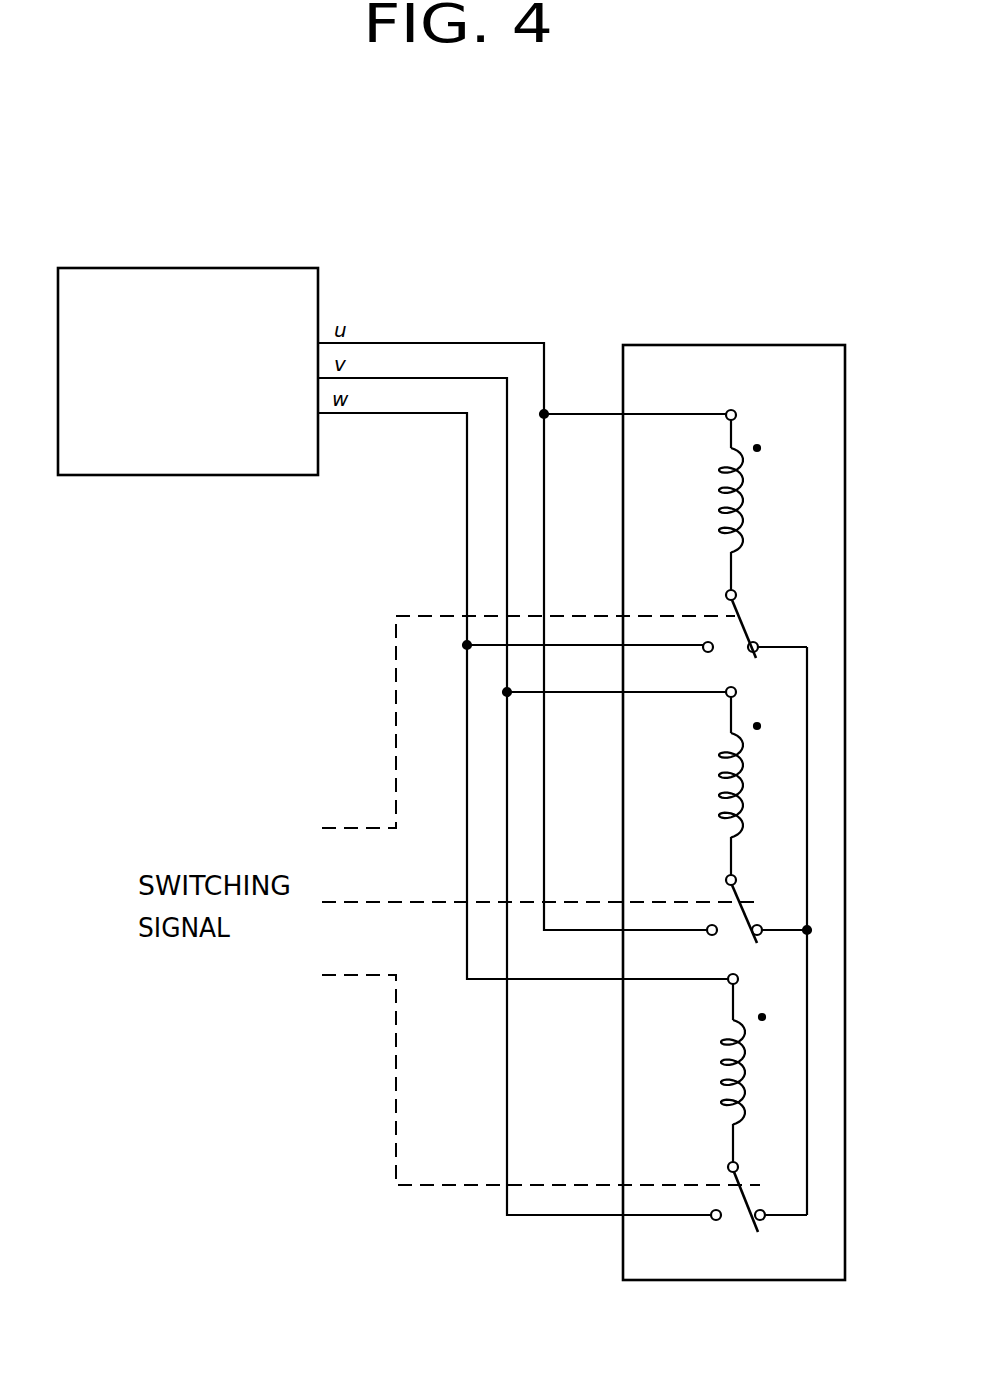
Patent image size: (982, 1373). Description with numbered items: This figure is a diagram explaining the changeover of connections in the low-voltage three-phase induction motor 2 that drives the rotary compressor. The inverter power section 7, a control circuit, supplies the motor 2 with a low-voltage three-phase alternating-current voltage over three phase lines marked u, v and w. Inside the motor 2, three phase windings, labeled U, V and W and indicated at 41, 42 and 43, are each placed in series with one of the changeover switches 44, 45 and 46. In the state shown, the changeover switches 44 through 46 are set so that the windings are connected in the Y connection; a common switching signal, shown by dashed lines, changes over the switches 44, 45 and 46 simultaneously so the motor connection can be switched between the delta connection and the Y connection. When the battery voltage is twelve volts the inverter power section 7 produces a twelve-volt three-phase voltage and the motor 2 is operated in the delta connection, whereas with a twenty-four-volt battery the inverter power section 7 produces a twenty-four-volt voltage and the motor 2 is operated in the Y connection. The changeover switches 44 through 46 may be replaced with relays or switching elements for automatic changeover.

The inverter power section 7 is at (176, 268).
The low-voltage three-phase induction motor 2 is at (665, 350).
The U-phase winding 41 is at (745, 503).
The V-phase winding 42 is at (745, 790).
The W-phase winding 43 is at (752, 1078).
The changeover switch 44 is at (743, 627).
The changeover switch 45 is at (743, 893).
The changeover switch 46 is at (752, 1202).